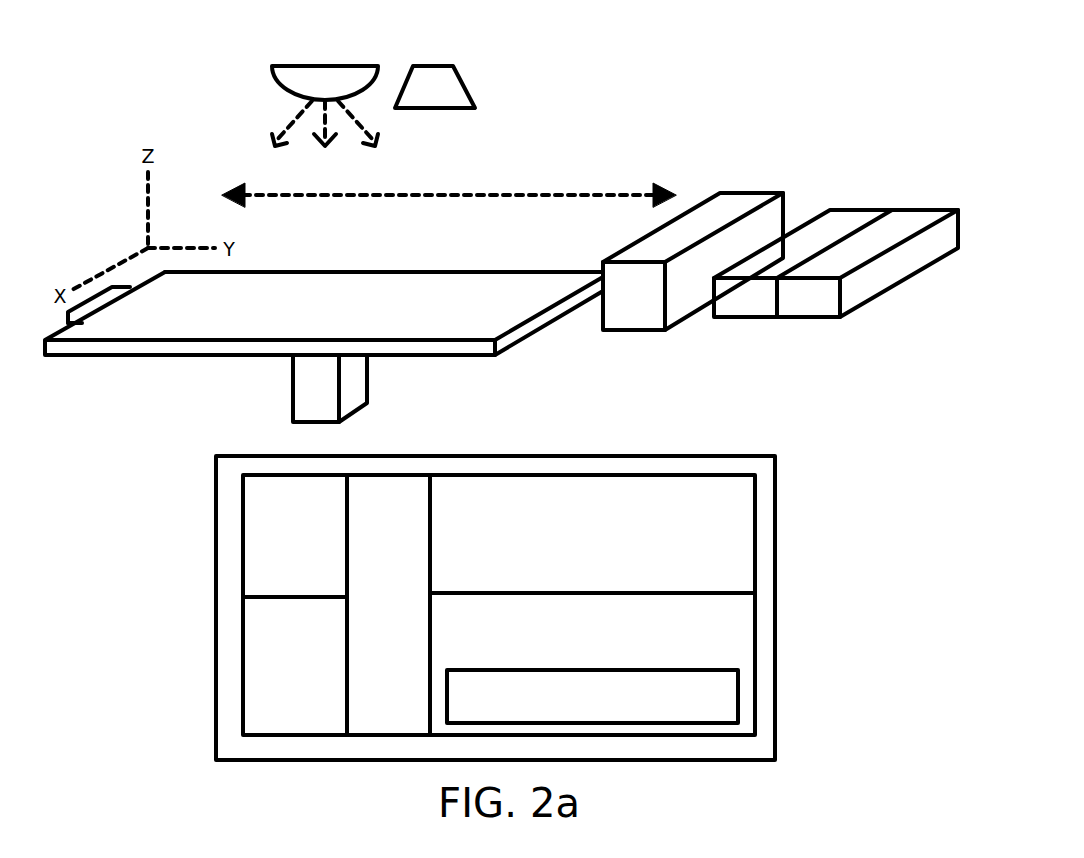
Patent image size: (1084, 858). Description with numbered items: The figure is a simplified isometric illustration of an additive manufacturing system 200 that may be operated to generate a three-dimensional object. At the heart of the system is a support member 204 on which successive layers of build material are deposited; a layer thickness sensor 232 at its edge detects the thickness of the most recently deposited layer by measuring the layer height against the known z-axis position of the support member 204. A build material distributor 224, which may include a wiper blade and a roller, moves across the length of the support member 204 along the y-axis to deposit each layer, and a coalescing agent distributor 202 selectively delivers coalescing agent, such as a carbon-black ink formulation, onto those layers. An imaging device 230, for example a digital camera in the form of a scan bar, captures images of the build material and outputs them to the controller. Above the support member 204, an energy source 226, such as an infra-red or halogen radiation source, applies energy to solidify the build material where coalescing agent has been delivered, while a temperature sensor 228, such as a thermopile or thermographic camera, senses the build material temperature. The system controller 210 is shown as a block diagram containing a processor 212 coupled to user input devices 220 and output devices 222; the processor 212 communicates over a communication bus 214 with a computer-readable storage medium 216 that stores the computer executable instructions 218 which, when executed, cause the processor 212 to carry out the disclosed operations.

The additive manufacturing system 200 is at (698, 93).
The coalescing agent distributor 202 is at (820, 318).
The support member 204 is at (452, 272).
The system controller 210 is at (213, 745).
The processor 212 is at (592, 534).
The communication bus 214 is at (388, 605).
The computer-readable storage medium 216 is at (592, 664).
The computer executable instructions 218 is at (592, 696).
The user input devices 220 is at (295, 666).
The output devices 222 is at (295, 536).
The build material distributor 224 is at (727, 193).
The energy source 226 is at (297, 66).
The temperature sensor 228 is at (450, 66).
The imaging device 230 is at (748, 318).
The layer thickness sensor 232 is at (128, 290).